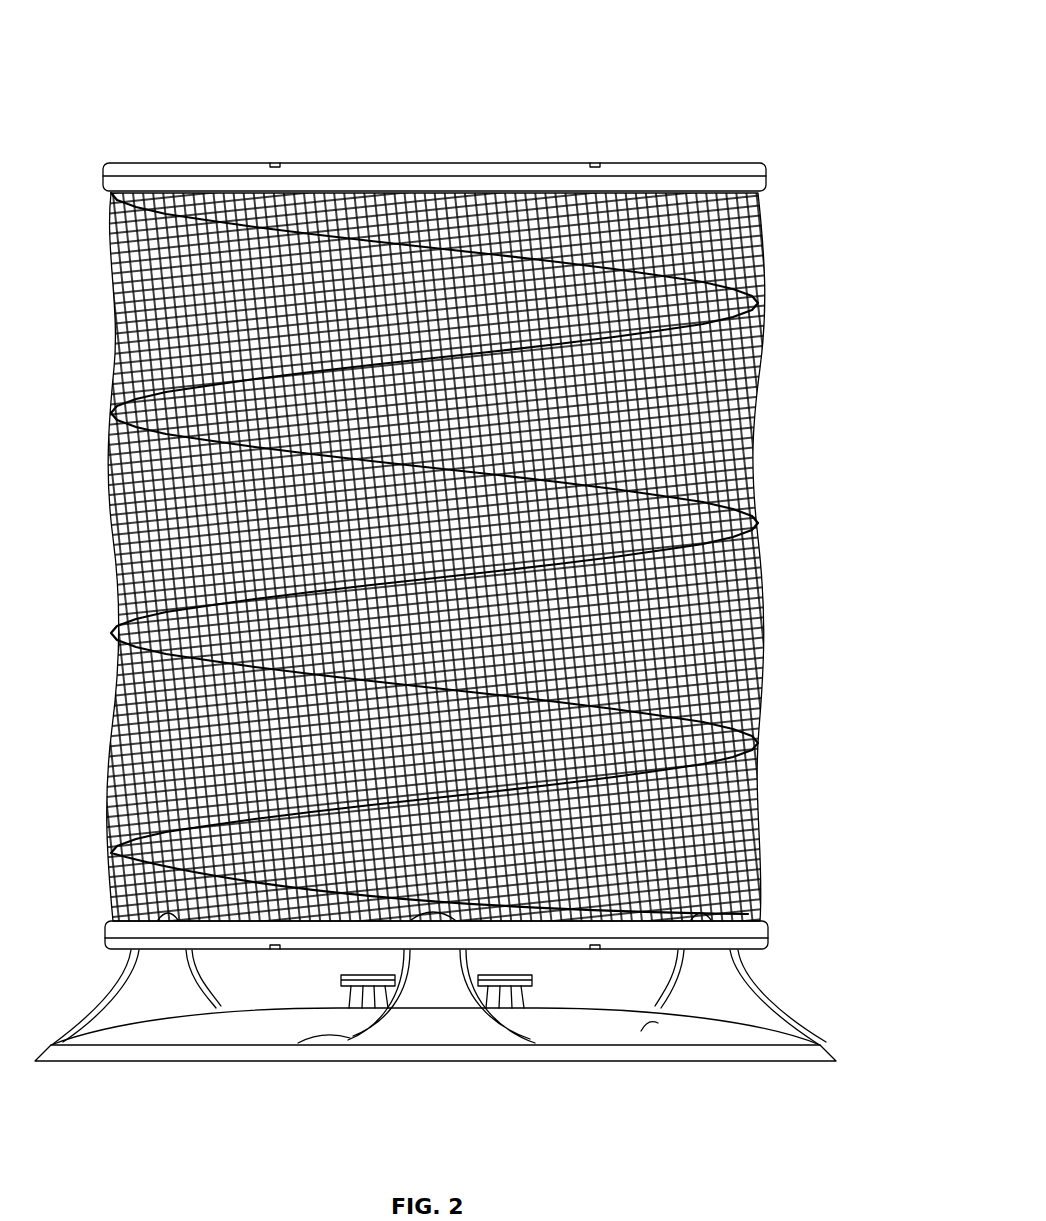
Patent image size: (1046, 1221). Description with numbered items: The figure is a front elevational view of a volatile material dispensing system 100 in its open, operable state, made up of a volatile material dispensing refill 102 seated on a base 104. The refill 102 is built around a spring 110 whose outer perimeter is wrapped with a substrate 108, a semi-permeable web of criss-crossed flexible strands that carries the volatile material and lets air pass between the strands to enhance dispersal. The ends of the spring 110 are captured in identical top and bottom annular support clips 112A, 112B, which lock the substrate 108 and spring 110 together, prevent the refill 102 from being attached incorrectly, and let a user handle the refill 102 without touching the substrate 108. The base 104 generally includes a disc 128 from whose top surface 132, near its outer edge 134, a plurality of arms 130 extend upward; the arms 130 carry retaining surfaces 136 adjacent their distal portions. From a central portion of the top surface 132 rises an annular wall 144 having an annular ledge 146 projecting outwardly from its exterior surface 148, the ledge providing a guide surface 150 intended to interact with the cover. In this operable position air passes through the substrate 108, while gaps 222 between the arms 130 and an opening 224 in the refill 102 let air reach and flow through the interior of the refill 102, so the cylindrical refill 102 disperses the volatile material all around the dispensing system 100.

The volatile material dispensing system 100 is at (104, 52).
The volatile material dispensing refill 102 is at (494, 527).
The base 104 is at (473, 1053).
The substrate 108 is at (740, 605).
The spring 110 is at (733, 276).
The top annular support clip 112A is at (745, 155).
The bottom annular support clip 112B is at (760, 920).
The disc 128 is at (118, 1028).
The arms 130 is at (135, 980).
The top surface 132 is at (633, 1023).
The outer edge 134 is at (828, 1053).
The retaining surfaces 136 is at (393, 942).
The annular wall 144 is at (513, 990).
The annular ledge 146 is at (524, 972).
The exterior surface 148 is at (527, 1035).
The guide surface 150 is at (333, 972).
The gaps 222 is at (252, 973).
The opening 224 is at (405, 147).